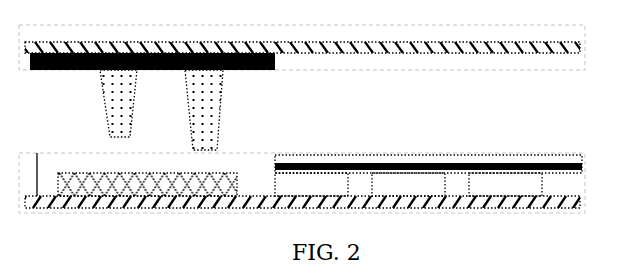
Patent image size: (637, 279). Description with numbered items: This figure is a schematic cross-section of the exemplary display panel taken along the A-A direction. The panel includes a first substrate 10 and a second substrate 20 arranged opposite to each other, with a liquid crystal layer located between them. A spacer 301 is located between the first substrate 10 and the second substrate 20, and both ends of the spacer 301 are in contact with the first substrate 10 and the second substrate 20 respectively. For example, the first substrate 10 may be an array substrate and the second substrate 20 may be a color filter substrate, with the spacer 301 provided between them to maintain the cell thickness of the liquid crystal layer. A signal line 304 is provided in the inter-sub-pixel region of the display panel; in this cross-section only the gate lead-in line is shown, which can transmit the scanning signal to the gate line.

The first substrate 10 is at (585, 182).
The second substrate 20 is at (586, 47).
The spacer 301 is at (215, 113).
The signal line 304 is at (184, 176).